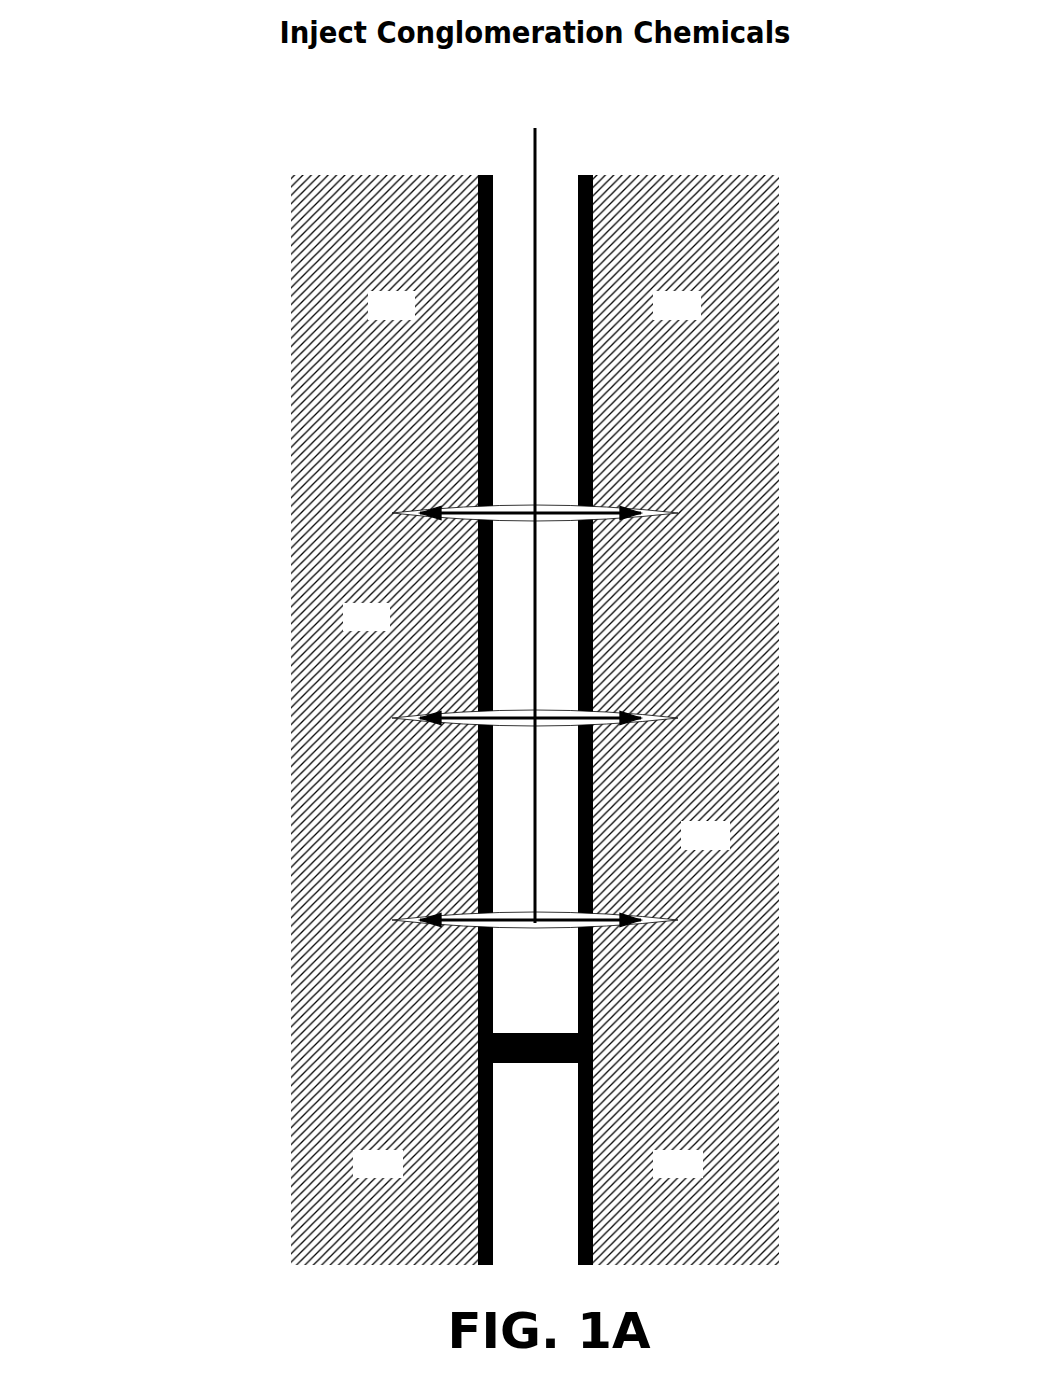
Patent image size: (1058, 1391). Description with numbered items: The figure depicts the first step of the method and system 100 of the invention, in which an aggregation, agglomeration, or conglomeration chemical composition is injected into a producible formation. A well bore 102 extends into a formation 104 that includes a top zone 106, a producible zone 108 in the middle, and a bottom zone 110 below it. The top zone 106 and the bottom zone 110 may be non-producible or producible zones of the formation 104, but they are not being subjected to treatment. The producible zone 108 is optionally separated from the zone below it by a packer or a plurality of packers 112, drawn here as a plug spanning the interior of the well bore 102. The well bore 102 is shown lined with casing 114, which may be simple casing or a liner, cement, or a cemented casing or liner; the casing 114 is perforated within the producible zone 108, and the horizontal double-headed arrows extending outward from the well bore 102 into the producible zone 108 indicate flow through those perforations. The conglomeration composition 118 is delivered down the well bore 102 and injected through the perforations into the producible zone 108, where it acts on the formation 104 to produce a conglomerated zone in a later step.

The method and system 100 is at (200, 611).
The well bore 102 is at (560, 160).
The formation 104 is at (262, 741).
The top zone 106 is at (367, 308).
The producible zone 108 is at (340, 620).
The bottom zone 110 is at (390, 1166).
The packer 112 is at (455, 1042).
The casing 114 is at (586, 619).
The conglomeration composition 118 is at (525, 160).